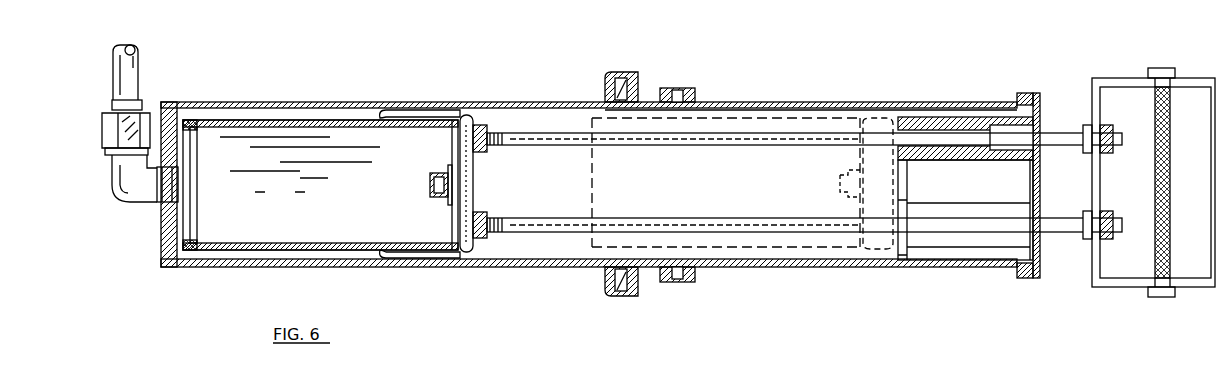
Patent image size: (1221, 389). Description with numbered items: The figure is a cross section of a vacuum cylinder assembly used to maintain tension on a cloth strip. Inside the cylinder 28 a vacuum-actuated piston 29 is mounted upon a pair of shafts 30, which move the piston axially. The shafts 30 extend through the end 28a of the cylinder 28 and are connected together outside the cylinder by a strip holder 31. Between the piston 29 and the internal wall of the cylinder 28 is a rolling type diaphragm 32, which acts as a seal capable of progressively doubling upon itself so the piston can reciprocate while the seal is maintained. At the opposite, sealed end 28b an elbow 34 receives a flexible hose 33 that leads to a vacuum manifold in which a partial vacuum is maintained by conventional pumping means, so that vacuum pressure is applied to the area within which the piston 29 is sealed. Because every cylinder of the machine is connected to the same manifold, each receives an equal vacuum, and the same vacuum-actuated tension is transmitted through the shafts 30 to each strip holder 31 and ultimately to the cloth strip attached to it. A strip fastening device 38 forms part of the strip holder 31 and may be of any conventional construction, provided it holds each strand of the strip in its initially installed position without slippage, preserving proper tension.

The cylinder 28 is at (574, 276).
The end of cylinder 28a is at (1040, 108).
The sealed end 28b is at (162, 240).
The vacuum-actuated piston 29 is at (320, 185).
The pair of shafts 30 is at (554, 226).
The strip holder 31 is at (1133, 98).
The rolling type diaphragm 32 is at (433, 103).
The flexible hose 33 is at (130, 68).
The elbow 34 is at (135, 202).
The strip fastening device 38 is at (1170, 150).